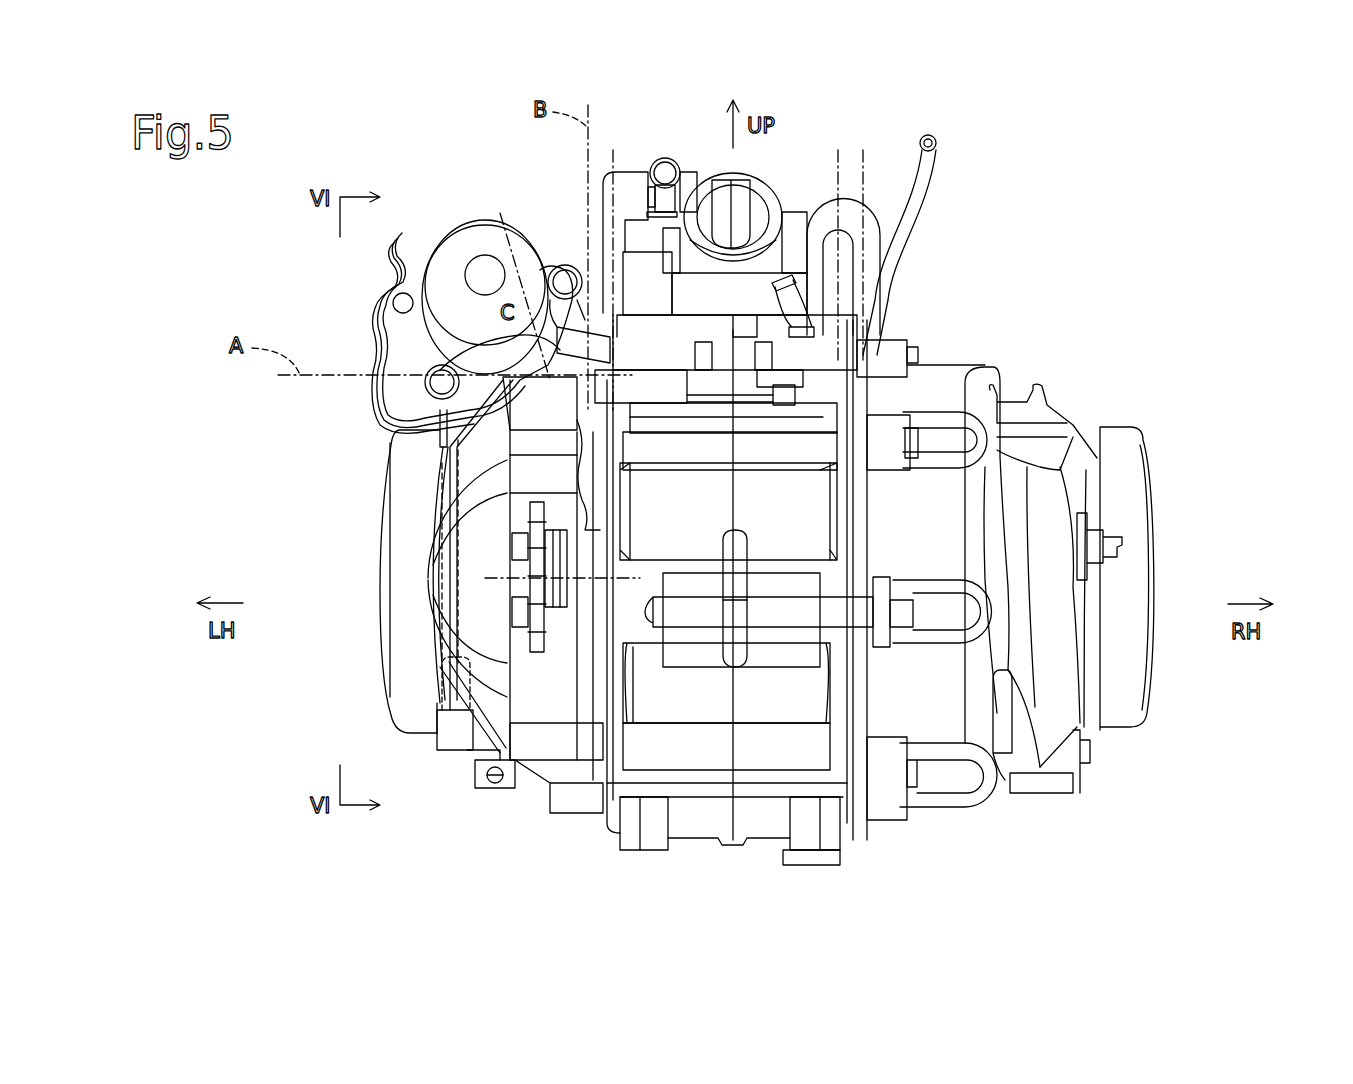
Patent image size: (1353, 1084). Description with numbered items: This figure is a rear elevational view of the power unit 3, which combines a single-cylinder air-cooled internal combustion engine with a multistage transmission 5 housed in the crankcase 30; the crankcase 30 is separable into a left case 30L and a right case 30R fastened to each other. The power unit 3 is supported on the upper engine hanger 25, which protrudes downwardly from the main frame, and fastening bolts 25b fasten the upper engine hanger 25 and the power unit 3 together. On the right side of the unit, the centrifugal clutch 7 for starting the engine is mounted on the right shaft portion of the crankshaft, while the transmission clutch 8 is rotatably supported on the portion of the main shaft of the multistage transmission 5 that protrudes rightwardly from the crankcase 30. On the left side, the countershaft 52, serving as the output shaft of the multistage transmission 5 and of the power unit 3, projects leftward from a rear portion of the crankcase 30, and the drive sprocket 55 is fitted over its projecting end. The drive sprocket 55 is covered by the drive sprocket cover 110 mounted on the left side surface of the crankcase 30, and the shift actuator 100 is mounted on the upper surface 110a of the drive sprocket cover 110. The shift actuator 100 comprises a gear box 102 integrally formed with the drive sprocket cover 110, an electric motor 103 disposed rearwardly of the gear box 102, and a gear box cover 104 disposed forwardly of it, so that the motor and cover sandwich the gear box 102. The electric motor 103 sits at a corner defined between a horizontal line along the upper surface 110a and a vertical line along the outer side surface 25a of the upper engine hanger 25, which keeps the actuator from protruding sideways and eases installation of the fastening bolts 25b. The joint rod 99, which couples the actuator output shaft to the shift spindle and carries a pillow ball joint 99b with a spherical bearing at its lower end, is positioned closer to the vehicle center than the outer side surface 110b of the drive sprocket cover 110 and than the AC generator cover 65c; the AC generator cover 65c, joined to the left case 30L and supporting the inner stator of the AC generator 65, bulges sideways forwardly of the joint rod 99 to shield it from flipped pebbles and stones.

The power unit 3 is at (1029, 205).
The multistage transmission 5 is at (782, 512).
The centrifugal clutch 7 is at (1101, 619).
The transmission clutch 8 is at (950, 717).
The upper engine hanger 25 is at (587, 160).
The outer side surface of the upper engine hanger 25a is at (600, 205).
The fastening bolts 25b is at (511, 283).
The crankcase 30 is at (513, 825).
The left case 30L is at (698, 838).
The right case 30R is at (780, 840).
The countershaft 52 is at (500, 578).
The drive sprocket 55 is at (455, 700).
The AC generator 65 is at (400, 672).
The AC generator cover 65c is at (380, 505).
The joint rod 99 is at (428, 573).
The pillow ball joint 99b is at (440, 748).
The shift actuator 100 is at (426, 224).
The gear box 102 is at (397, 350).
The electric motor 103 is at (458, 225).
The gear box cover 104 is at (501, 332).
The drive sprocket cover 110 is at (418, 647).
The upper surface of the drive sprocket cover 110a is at (528, 335).
The outer side surface of the drive sprocket cover 110b is at (428, 610).